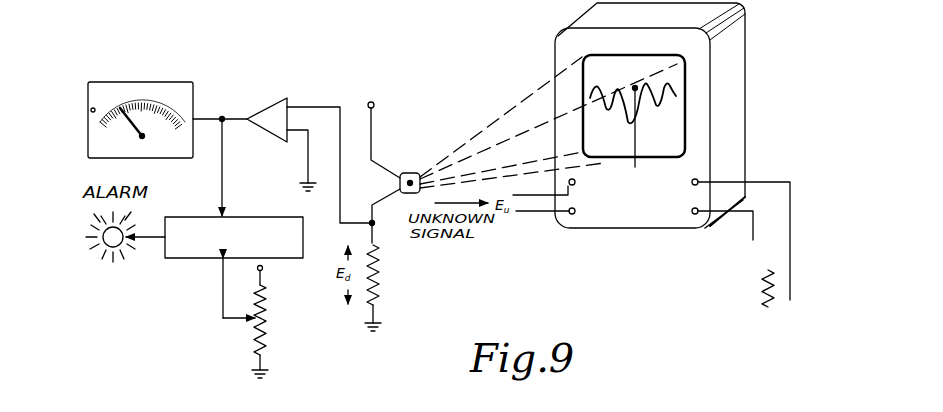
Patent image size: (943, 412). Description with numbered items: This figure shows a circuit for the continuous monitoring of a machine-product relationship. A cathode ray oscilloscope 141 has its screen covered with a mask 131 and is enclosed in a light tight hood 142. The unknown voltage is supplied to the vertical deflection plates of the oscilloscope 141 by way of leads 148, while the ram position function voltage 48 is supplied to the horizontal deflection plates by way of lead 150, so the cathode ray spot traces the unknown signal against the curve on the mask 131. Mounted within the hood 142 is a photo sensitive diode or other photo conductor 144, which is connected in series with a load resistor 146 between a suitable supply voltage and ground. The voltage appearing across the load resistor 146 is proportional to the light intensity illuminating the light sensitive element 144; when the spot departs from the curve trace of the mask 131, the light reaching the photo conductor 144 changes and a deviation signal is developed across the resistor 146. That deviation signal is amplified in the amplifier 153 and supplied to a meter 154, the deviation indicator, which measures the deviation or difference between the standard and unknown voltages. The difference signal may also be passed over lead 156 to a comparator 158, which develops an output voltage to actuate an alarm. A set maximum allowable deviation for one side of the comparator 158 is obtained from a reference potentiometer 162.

The meter 154 is at (175, 78).
The amplifier 153 is at (268, 105).
The lead 156 is at (225, 168).
The comparator 158 is at (176, 258).
The reference potentiometer 162 is at (264, 326).
The photo conductor 144 is at (413, 171).
The load resistor 146 is at (380, 290).
The light tight hood 142 is at (548, 117).
The leads 148 is at (537, 214).
The cathode ray oscilloscope 141 is at (700, 95).
The mask 131 is at (673, 70).
The lead 150 is at (770, 181).
The ram position function voltage 48 is at (789, 303).